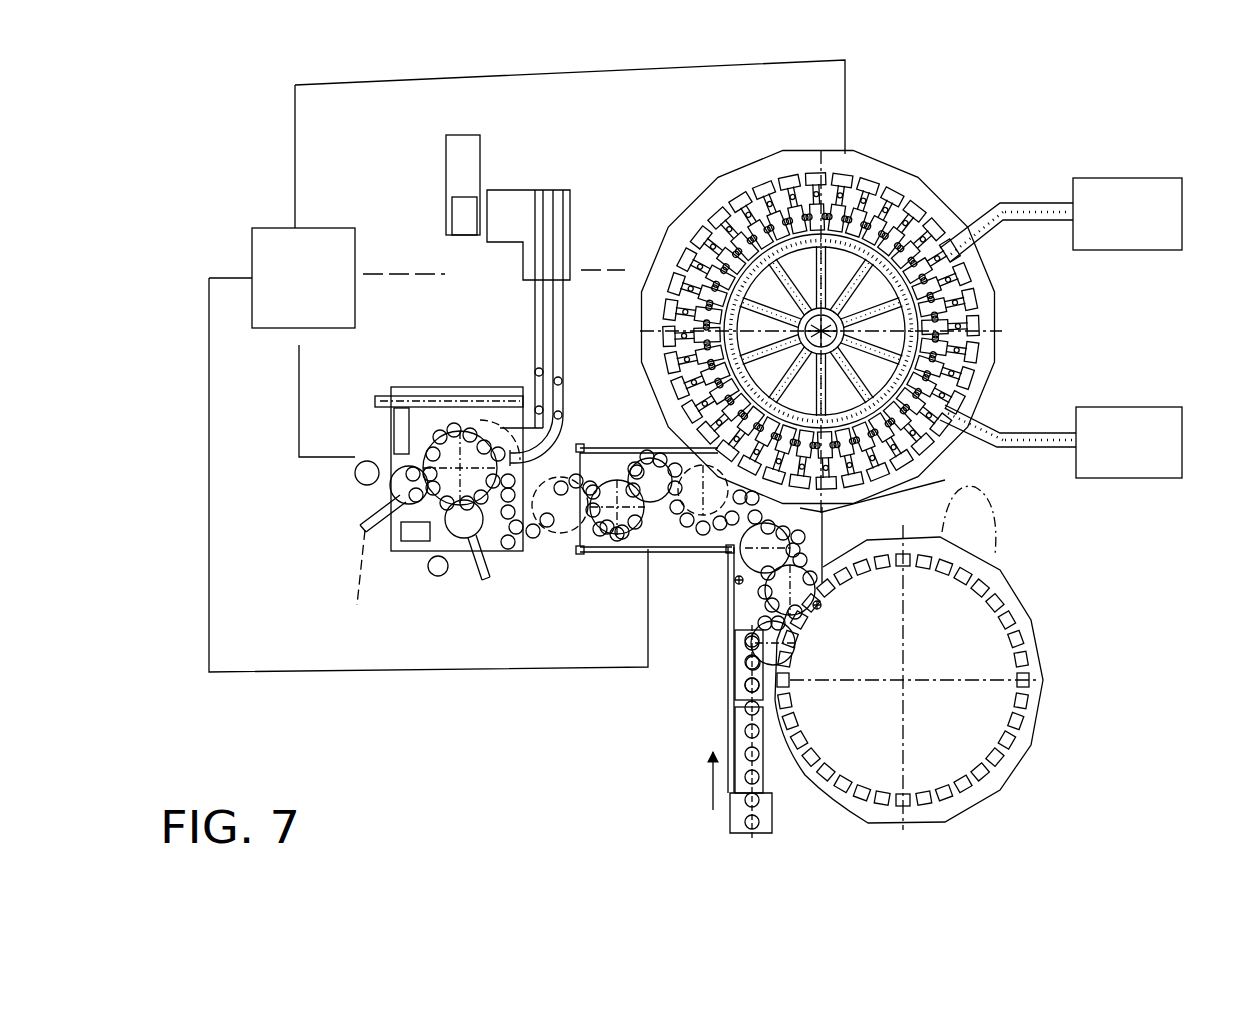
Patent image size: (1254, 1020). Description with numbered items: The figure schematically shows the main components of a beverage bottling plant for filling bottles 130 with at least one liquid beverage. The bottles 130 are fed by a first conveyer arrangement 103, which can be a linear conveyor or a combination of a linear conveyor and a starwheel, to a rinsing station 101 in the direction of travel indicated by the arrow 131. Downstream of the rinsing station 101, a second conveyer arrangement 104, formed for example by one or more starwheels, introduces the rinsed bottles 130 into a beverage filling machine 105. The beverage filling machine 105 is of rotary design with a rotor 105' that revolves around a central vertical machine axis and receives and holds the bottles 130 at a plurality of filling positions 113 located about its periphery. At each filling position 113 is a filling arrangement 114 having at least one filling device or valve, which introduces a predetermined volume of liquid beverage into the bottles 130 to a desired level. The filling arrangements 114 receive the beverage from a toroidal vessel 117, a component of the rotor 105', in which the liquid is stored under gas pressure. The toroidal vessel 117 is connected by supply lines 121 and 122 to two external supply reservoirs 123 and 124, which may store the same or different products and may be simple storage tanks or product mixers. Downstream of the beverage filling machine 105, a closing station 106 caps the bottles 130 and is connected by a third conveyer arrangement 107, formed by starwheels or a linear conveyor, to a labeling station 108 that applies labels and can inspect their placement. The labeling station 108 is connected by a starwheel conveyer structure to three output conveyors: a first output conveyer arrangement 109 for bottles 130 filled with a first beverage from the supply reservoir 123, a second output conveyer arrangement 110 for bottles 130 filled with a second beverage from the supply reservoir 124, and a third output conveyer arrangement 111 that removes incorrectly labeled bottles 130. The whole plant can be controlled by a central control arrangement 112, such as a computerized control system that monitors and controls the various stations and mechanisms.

The rinsing station 101 is at (1052, 574).
The first conveyer arrangement 103 is at (765, 762).
The second conveyer arrangement 104 is at (742, 612).
The beverage filling machine 105 is at (875, 319).
The rotor 105' is at (818, 314).
The closing station 106 is at (640, 441).
The third conveyer arrangement 107 is at (590, 567).
The labeling station 108 is at (415, 594).
The first output conveyer arrangement 109 is at (562, 368).
The second output conveyer arrangement 110 is at (533, 310).
The third output conveyer arrangement 111 is at (425, 395).
The central control arrangement 112 is at (303, 278).
The filling positions 113 is at (984, 262).
The filling arrangement 114 is at (986, 356).
The toroidal vessel 117 is at (932, 477).
The supply line 121 is at (1022, 200).
The supply line 122 is at (1030, 425).
The external supply reservoir 123 is at (1172, 213).
The external supply reservoir 124 is at (1172, 445).
The bottles 130 is at (757, 777).
The arrow 131 is at (692, 781).